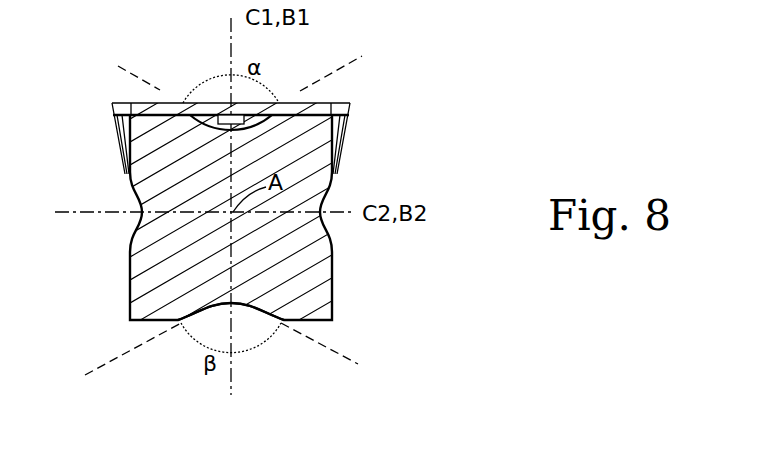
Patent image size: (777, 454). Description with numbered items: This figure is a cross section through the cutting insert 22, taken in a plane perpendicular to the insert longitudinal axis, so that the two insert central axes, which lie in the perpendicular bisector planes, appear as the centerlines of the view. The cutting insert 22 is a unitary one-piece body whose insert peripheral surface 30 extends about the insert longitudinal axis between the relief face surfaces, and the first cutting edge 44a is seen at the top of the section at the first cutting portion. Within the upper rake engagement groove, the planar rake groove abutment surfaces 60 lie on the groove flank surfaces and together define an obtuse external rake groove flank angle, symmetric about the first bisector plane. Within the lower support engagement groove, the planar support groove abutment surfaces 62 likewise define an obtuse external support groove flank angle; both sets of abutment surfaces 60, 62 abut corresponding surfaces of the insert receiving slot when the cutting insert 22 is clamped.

The cutting insert 22 is at (276, 227).
The insert peripheral surface 30 is at (335, 289).
The first cutting edge 44a is at (169, 104).
The rake groove abutment surface 60 is at (250, 119).
The support groove abutment surface 62 is at (252, 312).